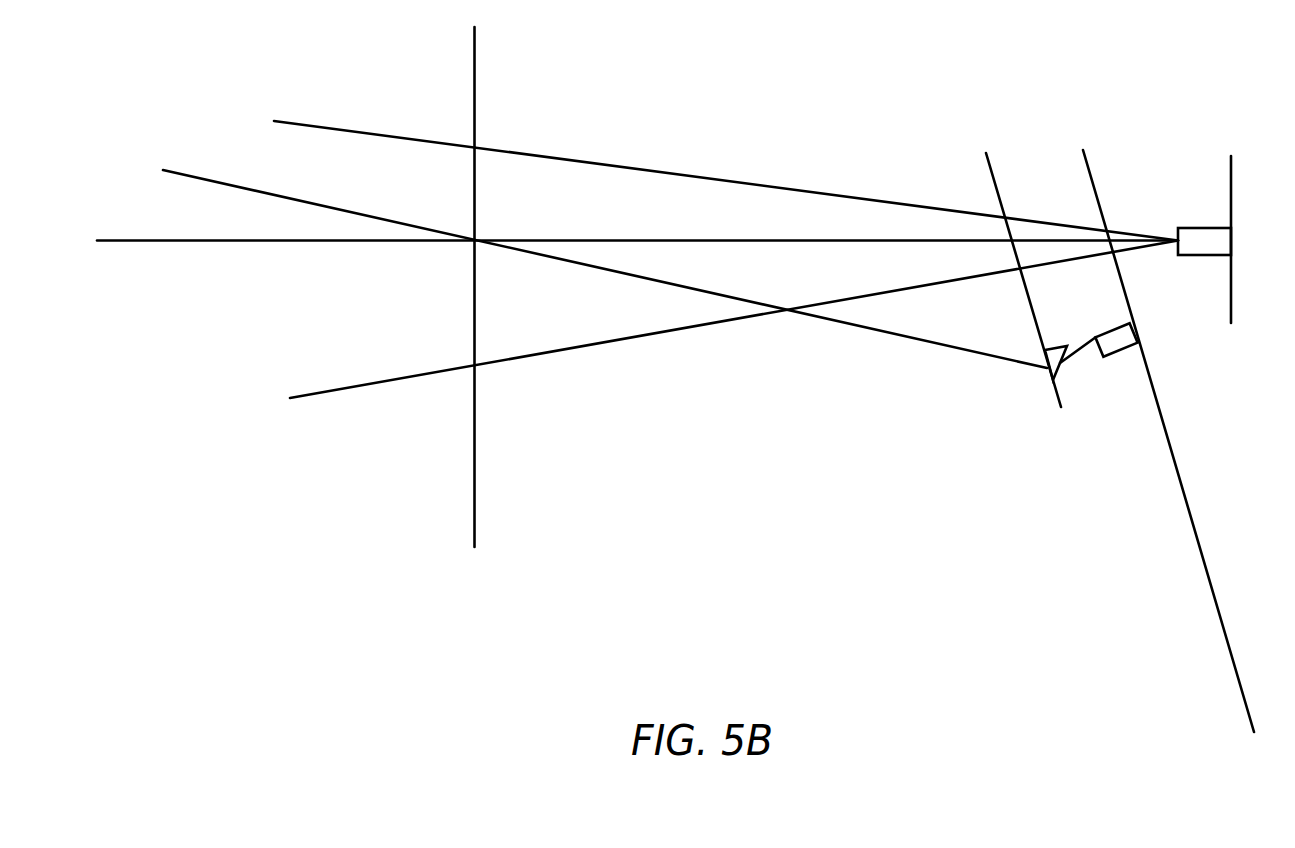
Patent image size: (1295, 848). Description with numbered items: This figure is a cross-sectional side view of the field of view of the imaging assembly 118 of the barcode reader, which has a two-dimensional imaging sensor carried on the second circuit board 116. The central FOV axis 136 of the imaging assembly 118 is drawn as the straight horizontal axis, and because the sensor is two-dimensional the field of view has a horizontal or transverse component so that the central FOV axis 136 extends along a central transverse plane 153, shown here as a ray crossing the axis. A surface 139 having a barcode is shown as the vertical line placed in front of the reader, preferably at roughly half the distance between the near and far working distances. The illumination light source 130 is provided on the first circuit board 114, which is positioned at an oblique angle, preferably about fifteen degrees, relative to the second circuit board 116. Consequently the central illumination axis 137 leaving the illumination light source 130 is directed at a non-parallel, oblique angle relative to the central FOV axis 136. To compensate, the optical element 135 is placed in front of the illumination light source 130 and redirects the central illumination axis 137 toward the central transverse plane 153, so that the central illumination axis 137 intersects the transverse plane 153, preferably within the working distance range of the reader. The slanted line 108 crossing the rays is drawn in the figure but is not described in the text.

The object plane 108 is at (995, 173).
The first circuit board 114 is at (1170, 439).
The second circuit board 116 is at (1231, 191).
The imaging assembly 118 is at (1198, 223).
The illumination light source 130 is at (1115, 360).
The optical element 135 is at (1062, 345).
The central FOV axis 136 is at (205, 243).
The central illumination axis 137 is at (935, 338).
The surface 139 is at (475, 67).
The central transverse plane 153 is at (327, 243).